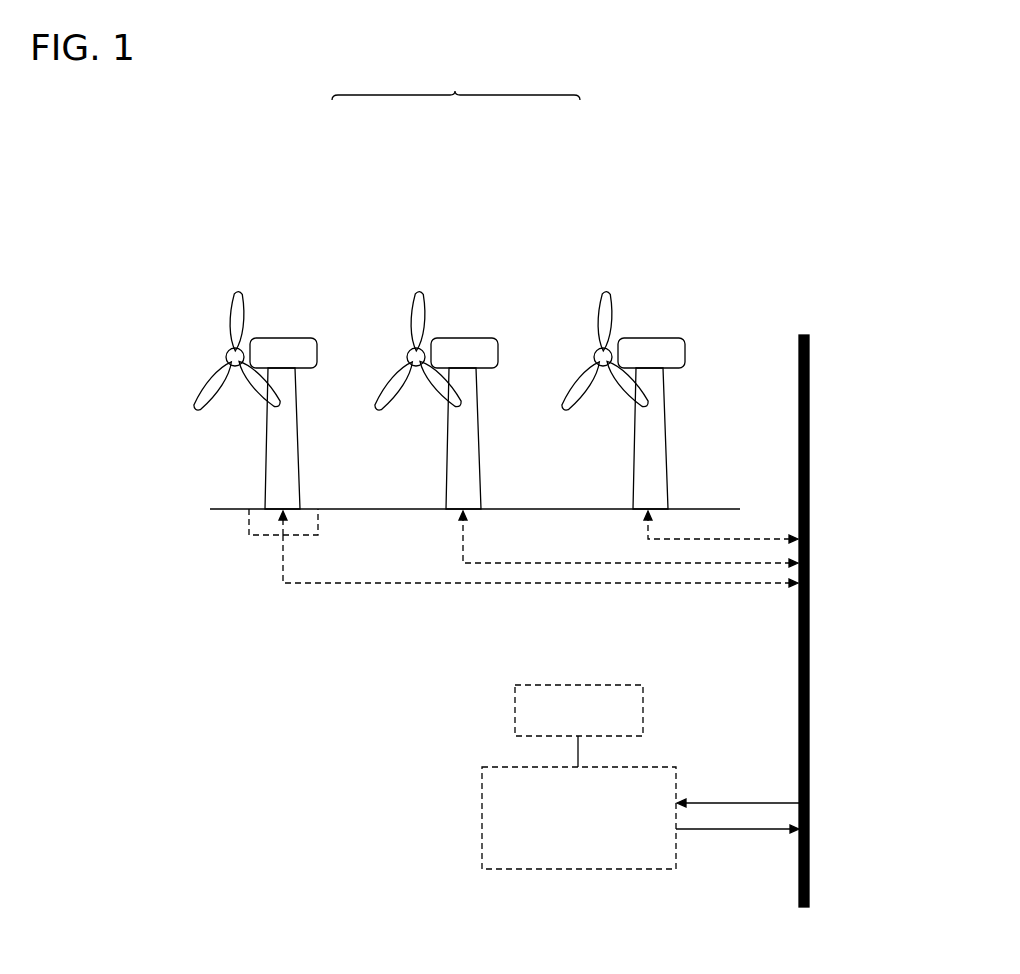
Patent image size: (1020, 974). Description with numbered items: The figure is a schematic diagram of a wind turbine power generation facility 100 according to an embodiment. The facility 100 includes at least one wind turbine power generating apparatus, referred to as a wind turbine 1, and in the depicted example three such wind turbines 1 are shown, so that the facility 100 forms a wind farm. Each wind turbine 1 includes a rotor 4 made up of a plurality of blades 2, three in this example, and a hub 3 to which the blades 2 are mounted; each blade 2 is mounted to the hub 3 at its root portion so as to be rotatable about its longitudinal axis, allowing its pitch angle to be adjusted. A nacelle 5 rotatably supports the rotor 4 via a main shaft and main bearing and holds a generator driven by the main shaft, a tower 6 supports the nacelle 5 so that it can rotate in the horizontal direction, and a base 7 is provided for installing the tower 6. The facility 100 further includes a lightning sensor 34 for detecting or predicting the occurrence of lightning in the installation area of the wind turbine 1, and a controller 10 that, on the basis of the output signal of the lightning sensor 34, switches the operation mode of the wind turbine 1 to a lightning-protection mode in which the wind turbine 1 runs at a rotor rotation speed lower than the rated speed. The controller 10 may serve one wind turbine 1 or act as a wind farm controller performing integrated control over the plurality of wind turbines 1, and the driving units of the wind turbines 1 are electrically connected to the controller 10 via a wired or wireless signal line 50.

The wind turbine power generation facility 100 is at (456, 77).
The wind turbine power generating apparatus 1 is at (331, 195).
The blade 2 is at (238, 297).
The hub 3 is at (227, 355).
The rotor 4 is at (213, 352).
The nacelle 5 is at (302, 347).
The tower 6 is at (288, 470).
The base 7 is at (258, 517).
The signal line 50 is at (810, 378).
The lightning sensor 34 is at (568, 687).
The controller 10 is at (590, 872).